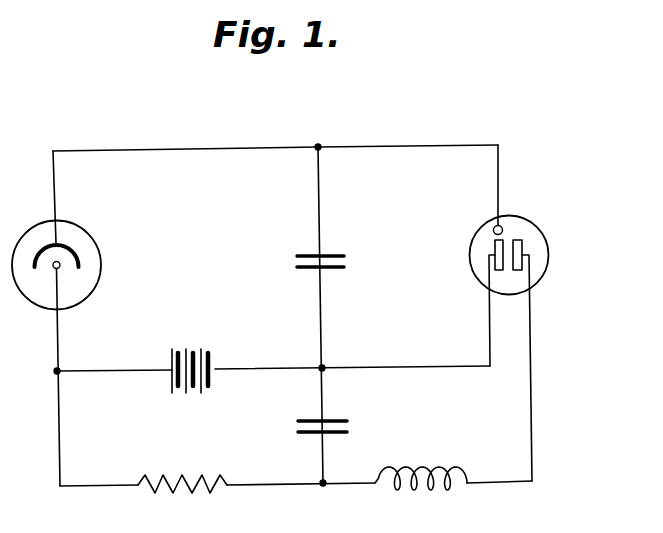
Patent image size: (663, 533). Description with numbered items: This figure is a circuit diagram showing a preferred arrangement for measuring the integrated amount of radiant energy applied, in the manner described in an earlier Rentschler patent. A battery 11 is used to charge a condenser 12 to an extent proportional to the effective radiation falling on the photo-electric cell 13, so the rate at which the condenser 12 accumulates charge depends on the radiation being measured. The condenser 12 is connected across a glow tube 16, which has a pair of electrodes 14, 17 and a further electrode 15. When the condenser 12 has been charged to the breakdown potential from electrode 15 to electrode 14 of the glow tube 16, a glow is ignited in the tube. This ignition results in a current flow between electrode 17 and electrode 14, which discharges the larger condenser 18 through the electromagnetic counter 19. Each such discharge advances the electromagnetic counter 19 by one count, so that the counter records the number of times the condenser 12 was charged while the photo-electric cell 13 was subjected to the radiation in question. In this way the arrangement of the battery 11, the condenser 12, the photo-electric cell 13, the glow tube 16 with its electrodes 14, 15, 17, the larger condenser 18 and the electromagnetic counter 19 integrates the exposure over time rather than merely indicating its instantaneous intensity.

The battery 11 is at (201, 349).
The condenser 12 is at (329, 256).
The photo-electric cell 13 is at (101, 265).
The glow tube electrode 14 is at (495, 244).
The glow tube electrode 15 is at (493, 229).
The glow tube 16 is at (538, 226).
The glow tube electrode 17 is at (522, 243).
The larger condenser 18 is at (346, 420).
The electromagnetic counter 19 is at (428, 491).